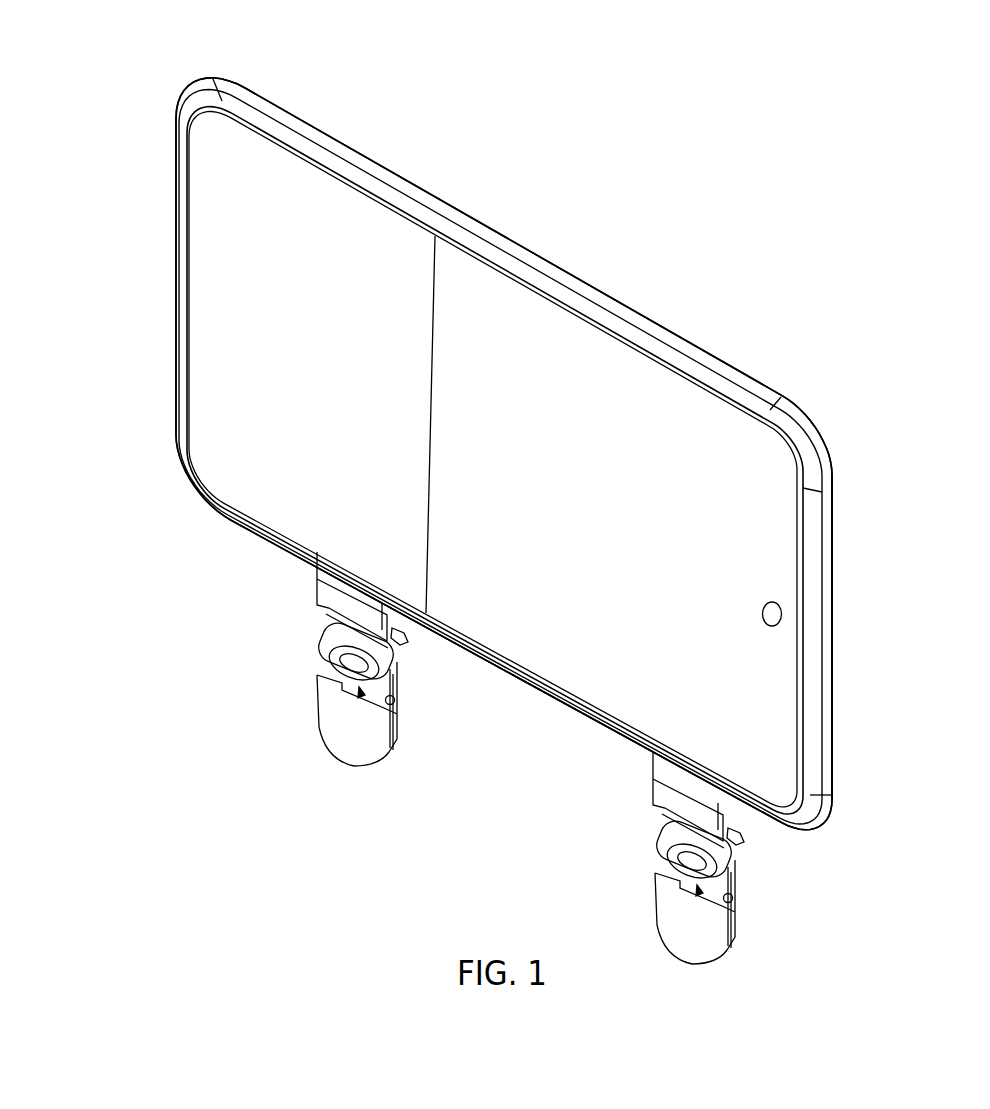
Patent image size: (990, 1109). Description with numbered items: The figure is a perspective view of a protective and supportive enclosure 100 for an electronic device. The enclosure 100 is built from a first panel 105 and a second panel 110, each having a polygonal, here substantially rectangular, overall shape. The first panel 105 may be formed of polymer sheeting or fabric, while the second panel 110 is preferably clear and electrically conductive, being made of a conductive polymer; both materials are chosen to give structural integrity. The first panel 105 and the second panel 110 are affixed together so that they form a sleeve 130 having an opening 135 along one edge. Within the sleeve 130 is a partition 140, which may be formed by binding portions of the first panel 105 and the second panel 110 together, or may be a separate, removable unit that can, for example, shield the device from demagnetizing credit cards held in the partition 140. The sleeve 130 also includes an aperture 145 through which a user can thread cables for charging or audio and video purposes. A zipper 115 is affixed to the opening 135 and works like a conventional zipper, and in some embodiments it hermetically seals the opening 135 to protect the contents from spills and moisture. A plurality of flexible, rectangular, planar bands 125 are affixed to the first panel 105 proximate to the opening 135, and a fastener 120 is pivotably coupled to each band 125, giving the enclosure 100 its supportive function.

The enclosure 100 is at (910, 157).
The first panel 105 is at (585, 283).
The second panel 110 is at (180, 109).
The zipper 115 is at (746, 841).
The fastener 120 is at (314, 733).
The band 125 is at (316, 584).
The sleeve 130 is at (851, 616).
The opening 135 is at (574, 699).
The partition 140 is at (427, 397).
The aperture 145 is at (770, 602).